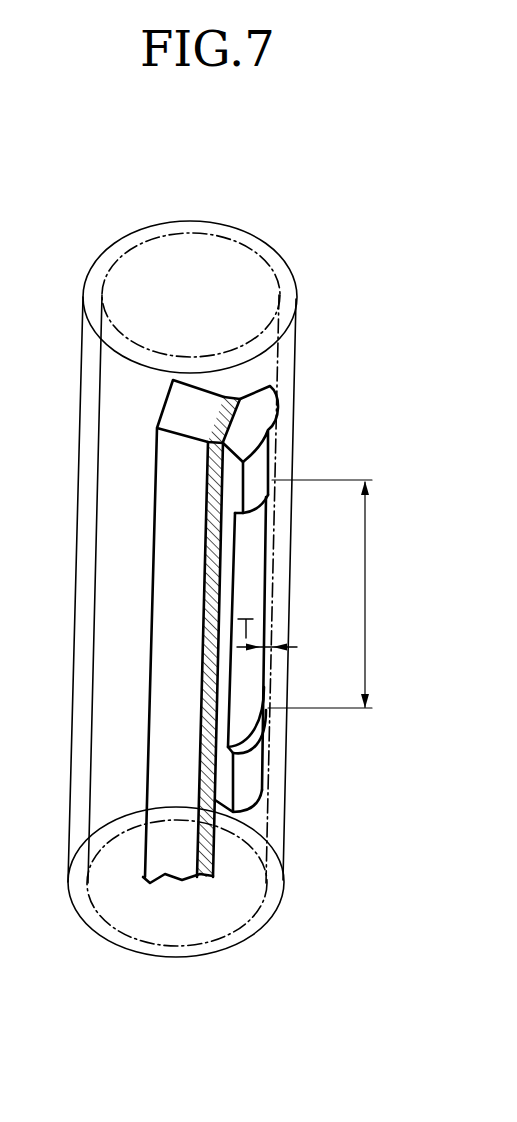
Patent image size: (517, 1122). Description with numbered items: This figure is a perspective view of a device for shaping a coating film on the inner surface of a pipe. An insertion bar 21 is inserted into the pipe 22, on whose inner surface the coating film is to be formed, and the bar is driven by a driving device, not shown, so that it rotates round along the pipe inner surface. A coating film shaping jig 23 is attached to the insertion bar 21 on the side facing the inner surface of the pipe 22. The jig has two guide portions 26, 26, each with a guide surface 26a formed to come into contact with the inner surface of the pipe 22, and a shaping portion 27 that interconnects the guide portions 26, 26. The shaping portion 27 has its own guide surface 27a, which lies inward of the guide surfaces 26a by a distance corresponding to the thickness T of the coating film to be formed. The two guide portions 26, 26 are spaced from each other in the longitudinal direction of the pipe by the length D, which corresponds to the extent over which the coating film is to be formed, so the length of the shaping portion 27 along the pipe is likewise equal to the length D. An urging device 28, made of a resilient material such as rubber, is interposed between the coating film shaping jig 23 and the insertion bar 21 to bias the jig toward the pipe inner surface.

The insertion bar 21 is at (170, 540).
The pipe 22 is at (100, 272).
The coating film shaping jig 23 is at (198, 585).
The guide portion 26 is at (287, 392).
The guide surface 26a is at (262, 463).
The shaping portion 27 is at (223, 660).
The guide surface of shaping portion 27a is at (250, 558).
The urging device 28 is at (207, 600).
The length D is at (330, 594).
The thickness T is at (267, 635).